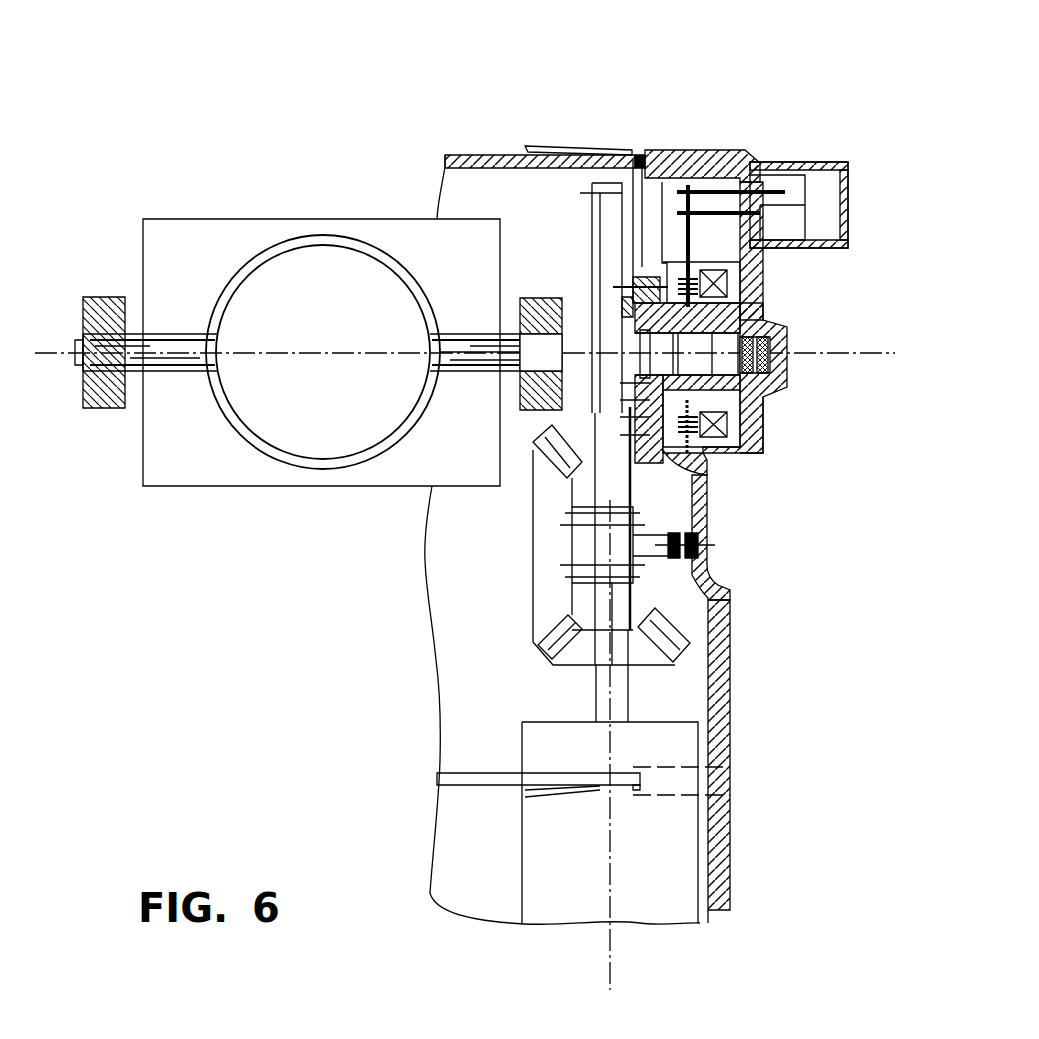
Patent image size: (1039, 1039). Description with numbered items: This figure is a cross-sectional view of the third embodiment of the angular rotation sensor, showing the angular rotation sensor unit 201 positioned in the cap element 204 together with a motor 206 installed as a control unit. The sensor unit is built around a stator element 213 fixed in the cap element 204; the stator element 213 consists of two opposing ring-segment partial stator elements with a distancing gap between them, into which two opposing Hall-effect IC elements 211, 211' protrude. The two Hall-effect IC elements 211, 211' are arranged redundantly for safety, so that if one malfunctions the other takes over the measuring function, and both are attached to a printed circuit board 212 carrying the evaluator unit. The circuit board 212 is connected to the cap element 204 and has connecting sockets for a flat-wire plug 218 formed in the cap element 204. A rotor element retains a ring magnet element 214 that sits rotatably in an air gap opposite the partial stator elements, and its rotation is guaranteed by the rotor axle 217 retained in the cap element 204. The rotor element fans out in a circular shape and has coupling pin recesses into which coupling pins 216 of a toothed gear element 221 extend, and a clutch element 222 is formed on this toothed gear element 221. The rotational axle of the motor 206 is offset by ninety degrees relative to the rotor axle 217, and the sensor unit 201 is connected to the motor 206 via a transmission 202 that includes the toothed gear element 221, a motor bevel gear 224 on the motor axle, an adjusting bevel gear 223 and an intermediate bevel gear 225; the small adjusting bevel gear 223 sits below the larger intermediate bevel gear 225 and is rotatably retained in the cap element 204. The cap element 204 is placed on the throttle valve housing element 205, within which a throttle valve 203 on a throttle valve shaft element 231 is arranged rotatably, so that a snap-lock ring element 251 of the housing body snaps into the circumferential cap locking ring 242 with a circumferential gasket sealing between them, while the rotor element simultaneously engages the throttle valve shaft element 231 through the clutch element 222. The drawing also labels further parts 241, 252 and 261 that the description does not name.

The angular rotation sensor unit 201 is at (672, 185).
The transmission 202 is at (640, 598).
The throttle valve 203 is at (270, 435).
The cap element 204 is at (722, 655).
The throttle valve housing element 205 is at (465, 620).
The motor 206 is at (652, 868).
The Hall-effect IC element 211 is at (770, 441).
The Hall-effect IC element 211' is at (773, 300).
The printed circuit board 212 is at (697, 248).
The stator element 213 is at (745, 428).
The ring magnet element 214 is at (763, 397).
The coupling pin 216 is at (660, 265).
The rotor axle 217 is at (680, 460).
The flat-wire plug 218 is at (795, 185).
The toothed gear element 221 is at (597, 252).
The clutch element 222 is at (517, 312).
The adjusting bevel gear 223 is at (580, 555).
The motor bevel gear 224 is at (590, 688).
The intermediate bevel gear 225 is at (545, 480).
The throttle valve shaft element 231 is at (167, 350).
The bolt 241 is at (712, 564).
The cap locking ring 242 is at (540, 147).
The snap-lock ring element 251 is at (480, 165).
The seal 252 is at (598, 150).
The plate 261 is at (740, 792).